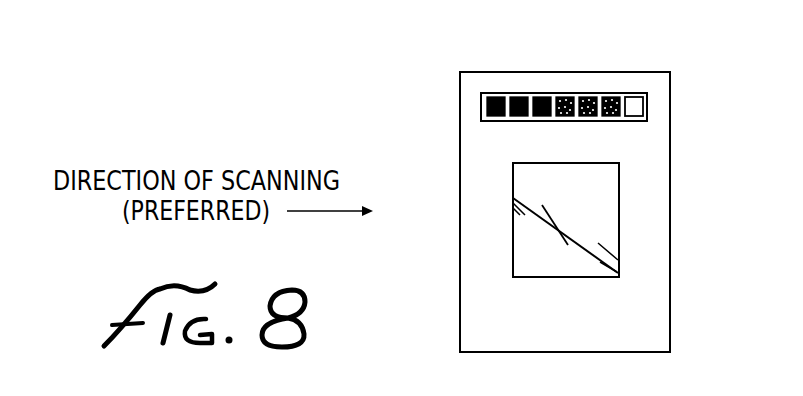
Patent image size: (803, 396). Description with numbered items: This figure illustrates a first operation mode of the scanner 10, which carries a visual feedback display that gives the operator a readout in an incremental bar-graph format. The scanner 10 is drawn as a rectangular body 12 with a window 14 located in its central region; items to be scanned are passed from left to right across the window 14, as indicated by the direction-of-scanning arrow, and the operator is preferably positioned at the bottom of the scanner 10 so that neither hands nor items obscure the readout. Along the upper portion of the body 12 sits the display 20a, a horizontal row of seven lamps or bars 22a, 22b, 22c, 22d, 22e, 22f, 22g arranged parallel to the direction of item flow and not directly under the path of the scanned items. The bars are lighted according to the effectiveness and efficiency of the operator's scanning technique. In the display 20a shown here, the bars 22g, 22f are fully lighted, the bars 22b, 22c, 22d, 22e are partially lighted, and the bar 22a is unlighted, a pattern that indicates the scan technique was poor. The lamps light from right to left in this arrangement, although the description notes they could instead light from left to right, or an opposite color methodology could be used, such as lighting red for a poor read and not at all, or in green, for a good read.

The scanner 10 is at (434, 45).
The substrate 12 is at (475, 157).
The window 14 is at (523, 219).
The display 20a is at (658, 107).
The bar 22a is at (495, 95).
The bar 22b is at (518, 95).
The bar 22c is at (538, 95).
The bar 22d is at (558, 121).
The bar 22e is at (588, 121).
The bar 22f is at (610, 95).
The bar 22g is at (638, 95).